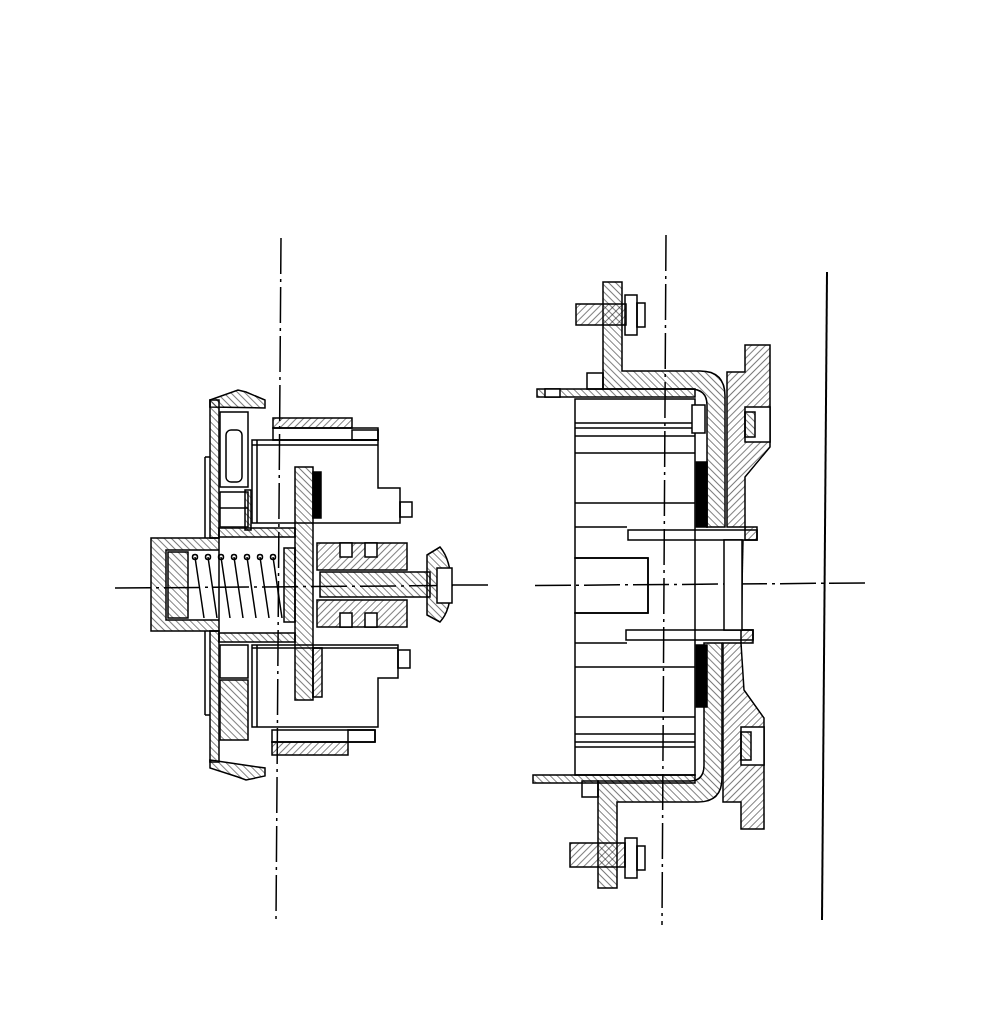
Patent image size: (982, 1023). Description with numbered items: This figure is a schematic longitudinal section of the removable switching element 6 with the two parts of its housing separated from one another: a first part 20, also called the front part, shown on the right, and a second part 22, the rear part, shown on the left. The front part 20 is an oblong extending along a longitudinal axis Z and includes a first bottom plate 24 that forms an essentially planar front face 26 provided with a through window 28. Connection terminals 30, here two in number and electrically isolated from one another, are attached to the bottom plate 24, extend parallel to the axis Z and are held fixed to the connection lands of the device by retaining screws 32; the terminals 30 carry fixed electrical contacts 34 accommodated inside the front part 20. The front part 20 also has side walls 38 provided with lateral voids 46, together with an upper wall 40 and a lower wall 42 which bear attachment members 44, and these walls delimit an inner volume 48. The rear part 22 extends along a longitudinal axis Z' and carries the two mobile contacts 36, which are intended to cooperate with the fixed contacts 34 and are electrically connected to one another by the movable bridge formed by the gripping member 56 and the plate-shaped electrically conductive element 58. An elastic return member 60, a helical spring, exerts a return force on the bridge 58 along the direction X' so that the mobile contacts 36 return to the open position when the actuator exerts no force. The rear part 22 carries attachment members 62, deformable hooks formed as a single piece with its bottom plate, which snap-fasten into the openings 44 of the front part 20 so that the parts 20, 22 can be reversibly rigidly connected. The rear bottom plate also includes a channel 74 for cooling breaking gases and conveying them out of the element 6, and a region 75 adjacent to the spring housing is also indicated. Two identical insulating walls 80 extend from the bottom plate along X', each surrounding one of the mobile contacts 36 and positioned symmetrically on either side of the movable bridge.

The removable element 6 is at (413, 55).
The first part 20 is at (518, 222).
The second part 22 is at (214, 262).
The first bottom plate 24 is at (768, 457).
The front face 26 is at (790, 478).
The through window 28 is at (765, 604).
The connection terminals 30 is at (680, 365).
The retaining screws 32 is at (592, 305).
The fixed electrical contacts 34 is at (690, 505).
The mobile contacts 36 is at (325, 485).
The side walls 38 is at (590, 705).
The upper wall 40 is at (600, 387).
The lower wall 42 is at (598, 808).
The attachment members 44 is at (558, 382).
The lateral voids 46 is at (594, 571).
The inner volume 48 is at (357, 519).
The gripping member 56 is at (445, 590).
The electrically conductive element 58 is at (296, 517).
The elastic return member 60 is at (196, 540).
The attachment members 62 is at (245, 392).
The channel 74 is at (128, 613).
The chamber 75 is at (262, 670).
The insulating walls 80 is at (363, 470).